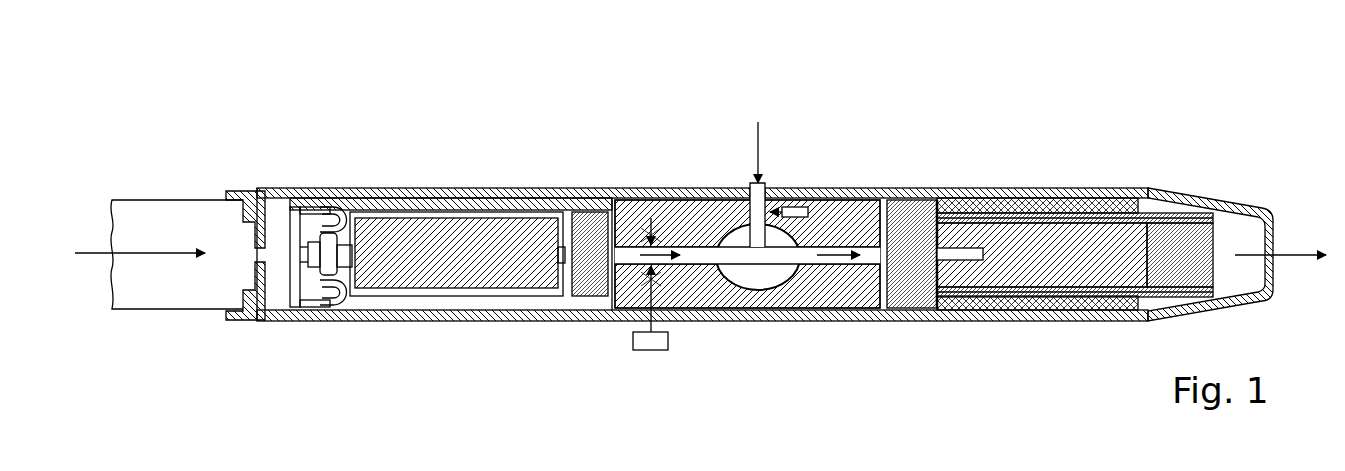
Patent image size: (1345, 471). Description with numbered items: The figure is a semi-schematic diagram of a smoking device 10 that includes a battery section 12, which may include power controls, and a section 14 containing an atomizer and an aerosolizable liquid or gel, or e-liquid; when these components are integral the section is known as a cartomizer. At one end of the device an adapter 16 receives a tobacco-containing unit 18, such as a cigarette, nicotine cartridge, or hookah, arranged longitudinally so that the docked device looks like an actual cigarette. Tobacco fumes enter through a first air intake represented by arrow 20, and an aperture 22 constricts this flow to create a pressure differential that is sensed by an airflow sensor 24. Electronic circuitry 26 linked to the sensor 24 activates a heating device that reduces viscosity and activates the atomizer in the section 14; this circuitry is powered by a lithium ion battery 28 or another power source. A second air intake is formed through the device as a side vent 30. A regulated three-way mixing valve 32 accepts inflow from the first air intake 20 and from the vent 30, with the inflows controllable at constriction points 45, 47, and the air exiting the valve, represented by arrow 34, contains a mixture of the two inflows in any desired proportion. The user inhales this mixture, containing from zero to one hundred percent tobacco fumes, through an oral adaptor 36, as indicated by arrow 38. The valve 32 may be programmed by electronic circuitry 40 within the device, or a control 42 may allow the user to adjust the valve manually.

The smoking device 10 is at (235, 106).
The battery section 12 is at (452, 306).
The section 14 is at (1060, 200).
The adapter 16 is at (240, 192).
The tobacco-containing unit 18 is at (162, 306).
The first air intake 20 is at (160, 252).
The aperture 22 is at (270, 256).
The airflow sensor 24 is at (342, 216).
The electronic circuitry 26 is at (346, 268).
The lithium ion battery 28 is at (455, 235).
The side vent 30 is at (755, 182).
The three-way mixing valve 32 is at (773, 290).
The air exiting the valve 34 is at (833, 262).
The oral adaptor 36 is at (1297, 262).
The inhaled air mixture 38 is at (1273, 242).
The electronic circuitry 40 is at (796, 206).
The control 42 is at (648, 351).
The constriction point 45 is at (746, 212).
The constriction point 47 is at (626, 316).